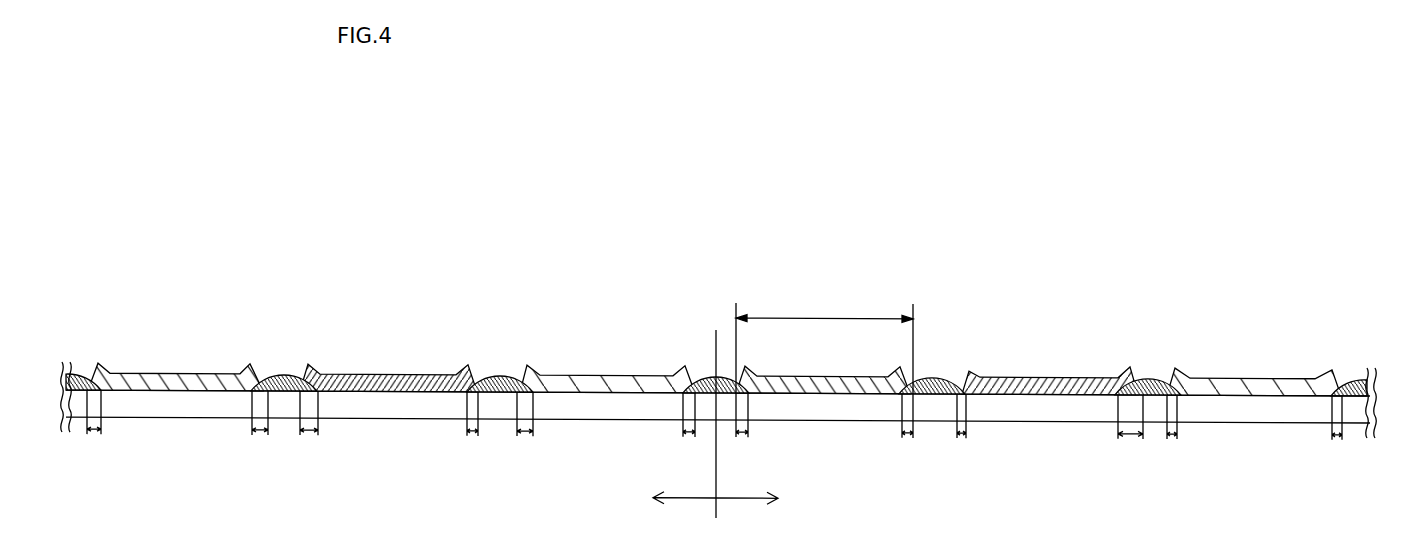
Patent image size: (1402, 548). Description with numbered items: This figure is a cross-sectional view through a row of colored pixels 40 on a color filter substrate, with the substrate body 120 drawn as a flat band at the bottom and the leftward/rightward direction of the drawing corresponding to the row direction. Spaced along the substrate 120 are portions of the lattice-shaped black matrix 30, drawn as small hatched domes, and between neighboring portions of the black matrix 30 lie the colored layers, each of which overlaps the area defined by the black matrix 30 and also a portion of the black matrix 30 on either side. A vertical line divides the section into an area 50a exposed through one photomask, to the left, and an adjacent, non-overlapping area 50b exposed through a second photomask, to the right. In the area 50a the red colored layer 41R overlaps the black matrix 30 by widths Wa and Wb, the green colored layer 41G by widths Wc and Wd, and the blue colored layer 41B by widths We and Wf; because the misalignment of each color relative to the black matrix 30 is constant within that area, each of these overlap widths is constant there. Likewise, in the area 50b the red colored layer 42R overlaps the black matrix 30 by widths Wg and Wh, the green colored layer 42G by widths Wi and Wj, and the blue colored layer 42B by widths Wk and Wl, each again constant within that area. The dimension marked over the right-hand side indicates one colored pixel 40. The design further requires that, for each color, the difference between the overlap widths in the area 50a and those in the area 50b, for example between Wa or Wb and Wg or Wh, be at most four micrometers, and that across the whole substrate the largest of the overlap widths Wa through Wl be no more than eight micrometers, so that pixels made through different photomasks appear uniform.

The colored layer of red 41R is at (150, 373).
The green colored layer 41G is at (387, 373).
The blue colored layer 41B is at (599, 381).
The colored layer of red 42R is at (805, 383).
The green colored layer 42G is at (1045, 383).
The blue colored layer 42B is at (1255, 383).
The black matrix 30 is at (933, 374).
The colored pixel 40 is at (825, 315).
The substrate 120 is at (1039, 406).
The area exposed through the photomask 50a is at (665, 500).
The area exposed through the photomask 50b is at (768, 500).
The overlap width Wa is at (94, 433).
The overlap width Wb is at (260, 433).
The overlap width Wc is at (309, 433).
The overlap width Wd is at (473, 433).
The overlap width We is at (525, 433).
The overlap width Wf is at (689, 433).
The overlap width Wg is at (742, 433).
The overlap width Wh is at (907, 433).
The overlap width Wi is at (962, 433).
The overlap width Wj is at (1130, 433).
The overlap width Wk is at (1172, 433).
The overlap width Wl is at (1337, 433).